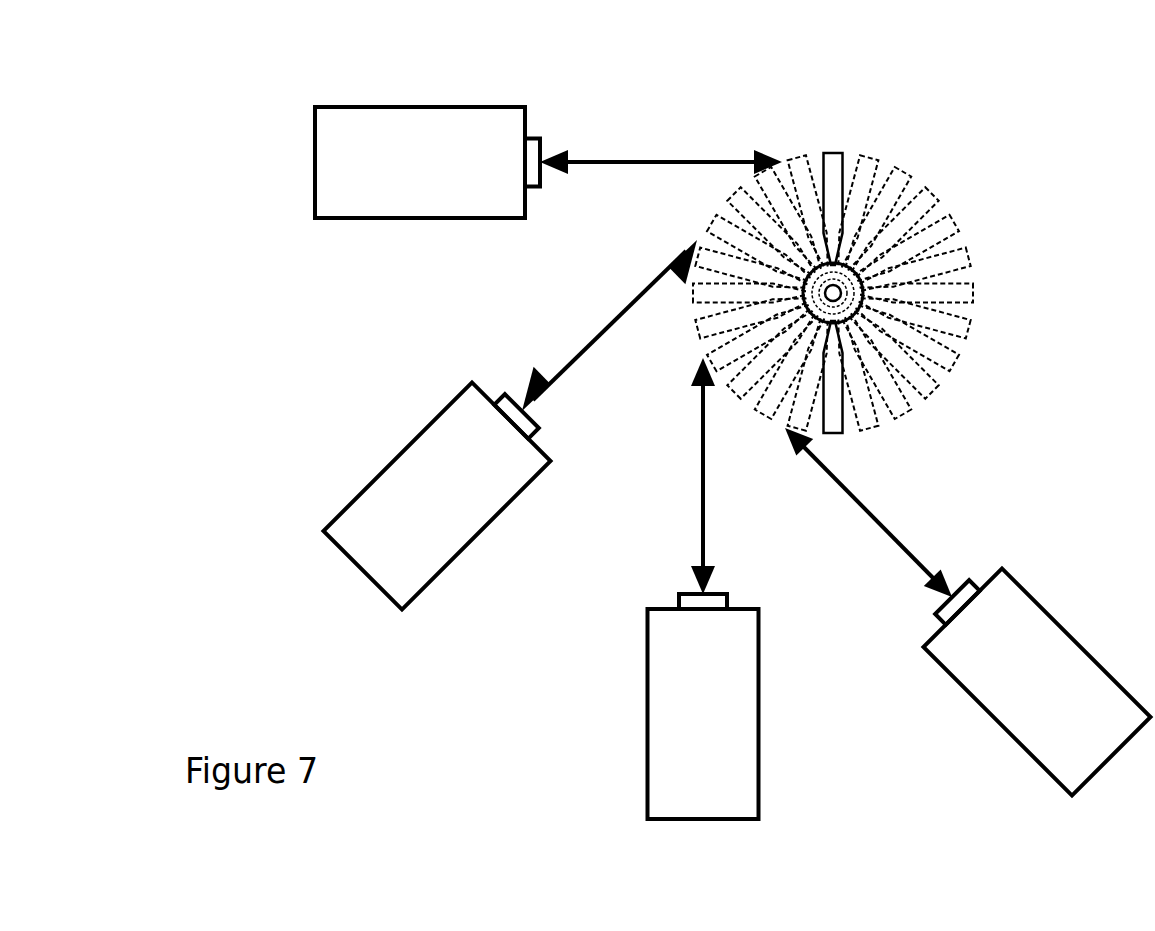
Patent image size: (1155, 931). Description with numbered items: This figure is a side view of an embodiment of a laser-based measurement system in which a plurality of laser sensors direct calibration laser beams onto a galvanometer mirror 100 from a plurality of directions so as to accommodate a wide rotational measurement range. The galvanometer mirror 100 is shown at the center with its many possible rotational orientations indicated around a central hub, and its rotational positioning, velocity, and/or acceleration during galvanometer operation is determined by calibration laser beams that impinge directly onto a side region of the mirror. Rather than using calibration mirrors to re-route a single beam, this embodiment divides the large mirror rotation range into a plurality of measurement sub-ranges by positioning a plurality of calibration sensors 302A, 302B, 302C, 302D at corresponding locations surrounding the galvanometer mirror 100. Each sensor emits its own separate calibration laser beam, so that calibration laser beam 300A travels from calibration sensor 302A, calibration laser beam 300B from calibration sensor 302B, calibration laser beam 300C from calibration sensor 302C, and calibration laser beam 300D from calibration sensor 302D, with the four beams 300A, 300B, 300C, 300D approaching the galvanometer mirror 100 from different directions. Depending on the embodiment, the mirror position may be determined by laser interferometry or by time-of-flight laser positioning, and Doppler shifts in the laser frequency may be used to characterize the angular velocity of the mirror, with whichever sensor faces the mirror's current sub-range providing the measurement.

The galvanometer mirror 100 is at (833, 150).
The calibration laser beam 300A is at (639, 160).
The calibration laser beam 300B is at (607, 327).
The calibration laser beam 300C is at (702, 483).
The calibration laser beam 300D is at (893, 537).
The calibration sensor 302A is at (389, 179).
The calibration sensor 302B is at (394, 511).
The calibration sensor 302C is at (674, 747).
The calibration sensor 302D is at (1008, 694).